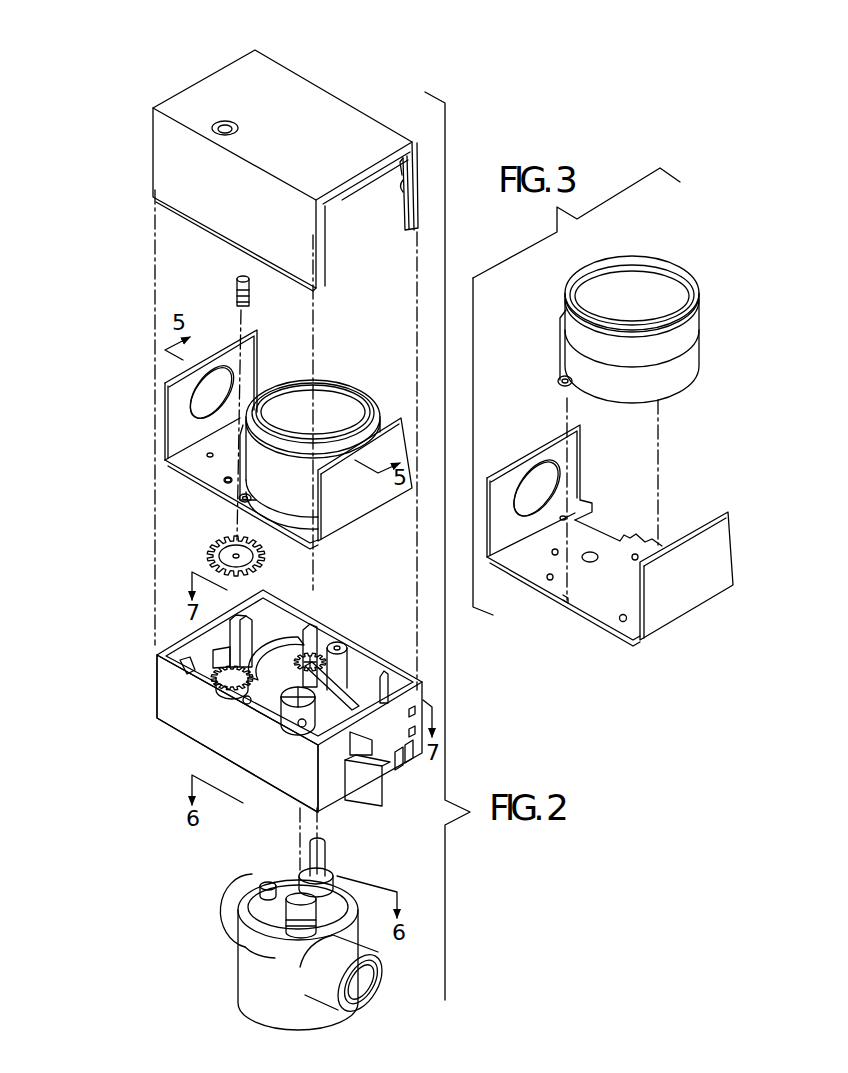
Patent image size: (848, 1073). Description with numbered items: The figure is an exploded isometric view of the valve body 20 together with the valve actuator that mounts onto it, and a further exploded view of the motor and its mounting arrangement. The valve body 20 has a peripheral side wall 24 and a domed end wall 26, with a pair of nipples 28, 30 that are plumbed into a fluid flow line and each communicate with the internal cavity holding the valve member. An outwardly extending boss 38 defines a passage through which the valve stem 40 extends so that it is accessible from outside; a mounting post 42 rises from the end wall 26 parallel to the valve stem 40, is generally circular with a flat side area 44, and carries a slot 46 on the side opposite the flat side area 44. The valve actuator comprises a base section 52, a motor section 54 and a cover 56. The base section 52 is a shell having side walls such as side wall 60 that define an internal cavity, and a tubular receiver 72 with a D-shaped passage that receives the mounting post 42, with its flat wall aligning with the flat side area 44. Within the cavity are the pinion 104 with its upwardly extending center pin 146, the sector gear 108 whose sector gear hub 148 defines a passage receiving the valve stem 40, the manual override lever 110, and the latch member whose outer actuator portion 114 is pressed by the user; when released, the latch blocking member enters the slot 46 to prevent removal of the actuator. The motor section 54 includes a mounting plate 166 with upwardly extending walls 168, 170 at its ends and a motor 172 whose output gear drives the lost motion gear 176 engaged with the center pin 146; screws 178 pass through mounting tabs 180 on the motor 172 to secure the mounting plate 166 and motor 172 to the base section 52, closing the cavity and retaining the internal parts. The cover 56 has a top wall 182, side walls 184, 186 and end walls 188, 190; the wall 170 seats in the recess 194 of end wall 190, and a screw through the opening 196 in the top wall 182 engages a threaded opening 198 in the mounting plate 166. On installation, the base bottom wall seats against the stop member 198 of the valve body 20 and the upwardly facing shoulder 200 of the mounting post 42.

In FIG. 2, the valve body 20 is at (223, 978).
In FIG. 2, the peripheral side wall 24 is at (247, 962).
In FIG. 2, the domed end wall 26 is at (263, 910).
In FIG. 2, the nipple 28 is at (230, 888).
In FIG. 2, the nipple 30 is at (375, 945).
In FIG. 2, the boss 38 is at (333, 877).
In FIG. 2, the valve stem 40 is at (325, 852).
In FIG. 2, the mounting post 42 is at (273, 882).
In FIG. 2, the flat side area 44 is at (397, 890).
In FIG. 2, the slot 46 is at (297, 918).
In FIG. 2, the base section 52 is at (132, 673).
In FIG. 2, the motor section 54 is at (127, 423).
In FIG. 2, the cover 56 is at (115, 155).
In FIG. 2, the side wall 60 is at (203, 713).
In FIG. 2, the tubular receiver 72 is at (288, 715).
In FIG. 2, the pinion 104 is at (167, 707).
In FIG. 2, the sector gear 108 is at (287, 633).
In FIG. 2, the manual override lever 110 is at (345, 666).
In FIG. 2, the outer actuator portion 114 is at (378, 781).
In FIG. 2, the center pin 146 is at (222, 652).
In FIG. 2, the sector gear hub 148 is at (218, 477).
In FIG. 2, the mounting plate 166 is at (192, 480).
In FIG. 3, the mounting plate 166 is at (590, 617).
In FIG. 2, the upwardly extending wall 168 is at (170, 378).
In FIG. 3, the upwardly extending wall 168 is at (547, 445).
In FIG. 2, the upwardly extending wall 170 is at (403, 417).
In FIG. 3, the upwardly extending wall 170 is at (722, 538).
In FIG. 2, the motor 172 is at (327, 370).
In FIG. 3, the motor 172 is at (690, 263).
In FIG. 2, the lost motion gear 176 is at (207, 545).
In FIG. 2, the screw 178 is at (240, 300).
In FIG. 3, the mounting tab 180 is at (558, 378).
In FIG. 2, the top wall 182 is at (290, 103).
In FIG. 2, the side wall 184 is at (180, 173).
In FIG. 2, the side wall 186 is at (382, 192).
In FIG. 2, the end wall 188 is at (185, 88).
In FIG. 2, the end wall 190 is at (400, 155).
In FIG. 2, the recess 194 is at (413, 187).
In FIG. 2, the opening 196 is at (228, 122).
In FIG. 2, the stop member 198 is at (237, 872).
In FIG. 2, the upwardly facing shoulder 200 is at (330, 909).